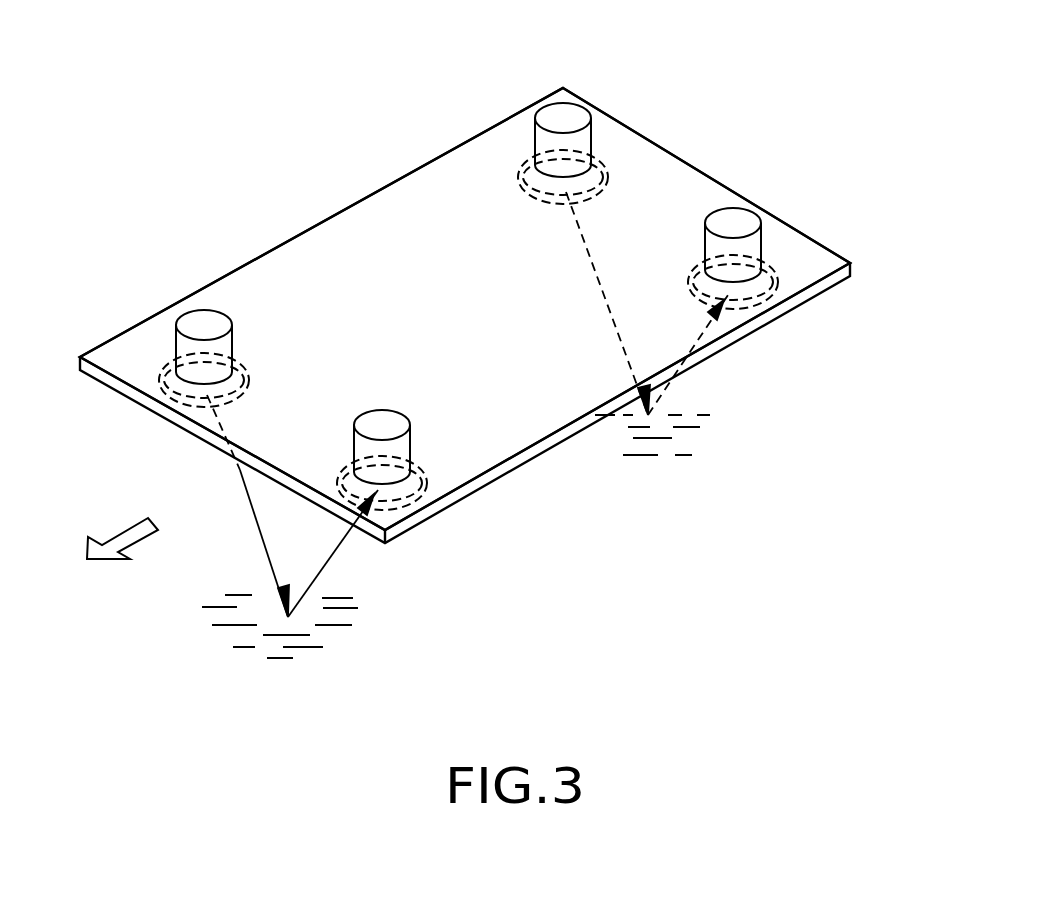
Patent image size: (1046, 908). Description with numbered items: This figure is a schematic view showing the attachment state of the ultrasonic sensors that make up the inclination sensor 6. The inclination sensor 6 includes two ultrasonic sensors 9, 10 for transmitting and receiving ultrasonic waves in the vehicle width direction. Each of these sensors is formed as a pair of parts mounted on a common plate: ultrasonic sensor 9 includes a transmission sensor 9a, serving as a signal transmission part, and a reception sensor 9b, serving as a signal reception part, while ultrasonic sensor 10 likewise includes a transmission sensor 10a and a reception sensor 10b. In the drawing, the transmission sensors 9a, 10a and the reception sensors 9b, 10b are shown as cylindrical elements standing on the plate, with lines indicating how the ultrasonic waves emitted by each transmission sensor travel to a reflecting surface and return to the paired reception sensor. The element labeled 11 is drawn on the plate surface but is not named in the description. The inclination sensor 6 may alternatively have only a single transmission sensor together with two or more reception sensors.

The inclination sensor 6 is at (672, 123).
The ultrasonic sensor 9 is at (148, 358).
The transmission sensor 9a is at (203, 324).
The reception sensor 9b is at (400, 458).
The ultrasonic sensor 10 is at (678, 175).
The transmission sensor 10a is at (570, 117).
The reception sensor 10b is at (740, 218).
The plate top surface 11 is at (360, 227).